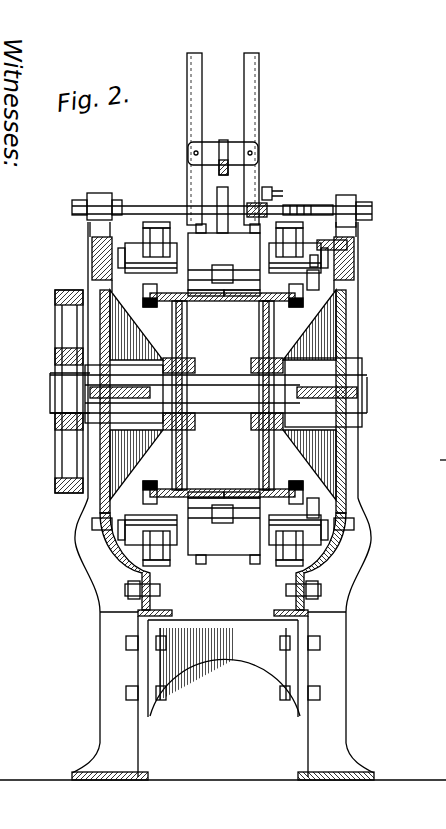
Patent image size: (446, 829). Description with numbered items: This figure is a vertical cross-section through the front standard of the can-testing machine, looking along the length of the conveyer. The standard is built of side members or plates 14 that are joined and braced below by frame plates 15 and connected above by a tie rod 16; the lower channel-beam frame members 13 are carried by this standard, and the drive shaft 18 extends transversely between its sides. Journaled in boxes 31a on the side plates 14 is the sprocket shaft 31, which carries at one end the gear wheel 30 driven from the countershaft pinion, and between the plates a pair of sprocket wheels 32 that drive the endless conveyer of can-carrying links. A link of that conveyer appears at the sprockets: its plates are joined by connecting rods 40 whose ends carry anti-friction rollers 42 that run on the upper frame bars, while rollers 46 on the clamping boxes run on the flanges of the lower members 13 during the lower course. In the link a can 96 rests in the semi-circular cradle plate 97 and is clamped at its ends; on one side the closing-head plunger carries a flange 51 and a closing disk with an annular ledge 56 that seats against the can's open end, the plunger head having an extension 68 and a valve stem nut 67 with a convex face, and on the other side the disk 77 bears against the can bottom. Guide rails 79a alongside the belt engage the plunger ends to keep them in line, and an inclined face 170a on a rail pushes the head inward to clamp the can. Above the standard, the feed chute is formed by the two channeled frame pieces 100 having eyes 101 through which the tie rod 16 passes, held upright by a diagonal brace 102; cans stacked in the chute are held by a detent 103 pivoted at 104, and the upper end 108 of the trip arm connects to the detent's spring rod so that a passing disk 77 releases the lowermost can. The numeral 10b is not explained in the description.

The lower parallel frame member 13 is at (192, 606).
The standard side member 14 is at (90, 497).
The frame plate 15 is at (233, 663).
The tie rod 16 is at (300, 205).
The drive shaft 18 is at (431, 461).
The gear wheel 30 is at (58, 356).
The sprocket shaft 31 is at (219, 376).
The box 31a is at (104, 362).
The sprocket wheel 32 is at (173, 442).
The connecting rod 40 is at (150, 297).
The anti-friction roller 42 is at (150, 308).
The anti-friction roller 46 is at (143, 223).
The flange 51 is at (237, 298).
The annular ledge 56 is at (202, 298).
The nut 67 is at (318, 262).
The extension 68 is at (318, 292).
The disk 77 is at (162, 232).
The guide rail 79a is at (93, 259).
The can 96 is at (224, 394).
The semi-circular plate 97 is at (226, 265).
The channeled frame piece 100 is at (248, 77).
The eye 101 is at (192, 208).
The diagonal brace 102 is at (227, 146).
The detent 103 is at (230, 200).
The pivot 104 is at (254, 203).
The upper end of trip arm 108 is at (275, 198).
The inclined face 170a is at (341, 208).
The end nut 10b is at (95, 237).